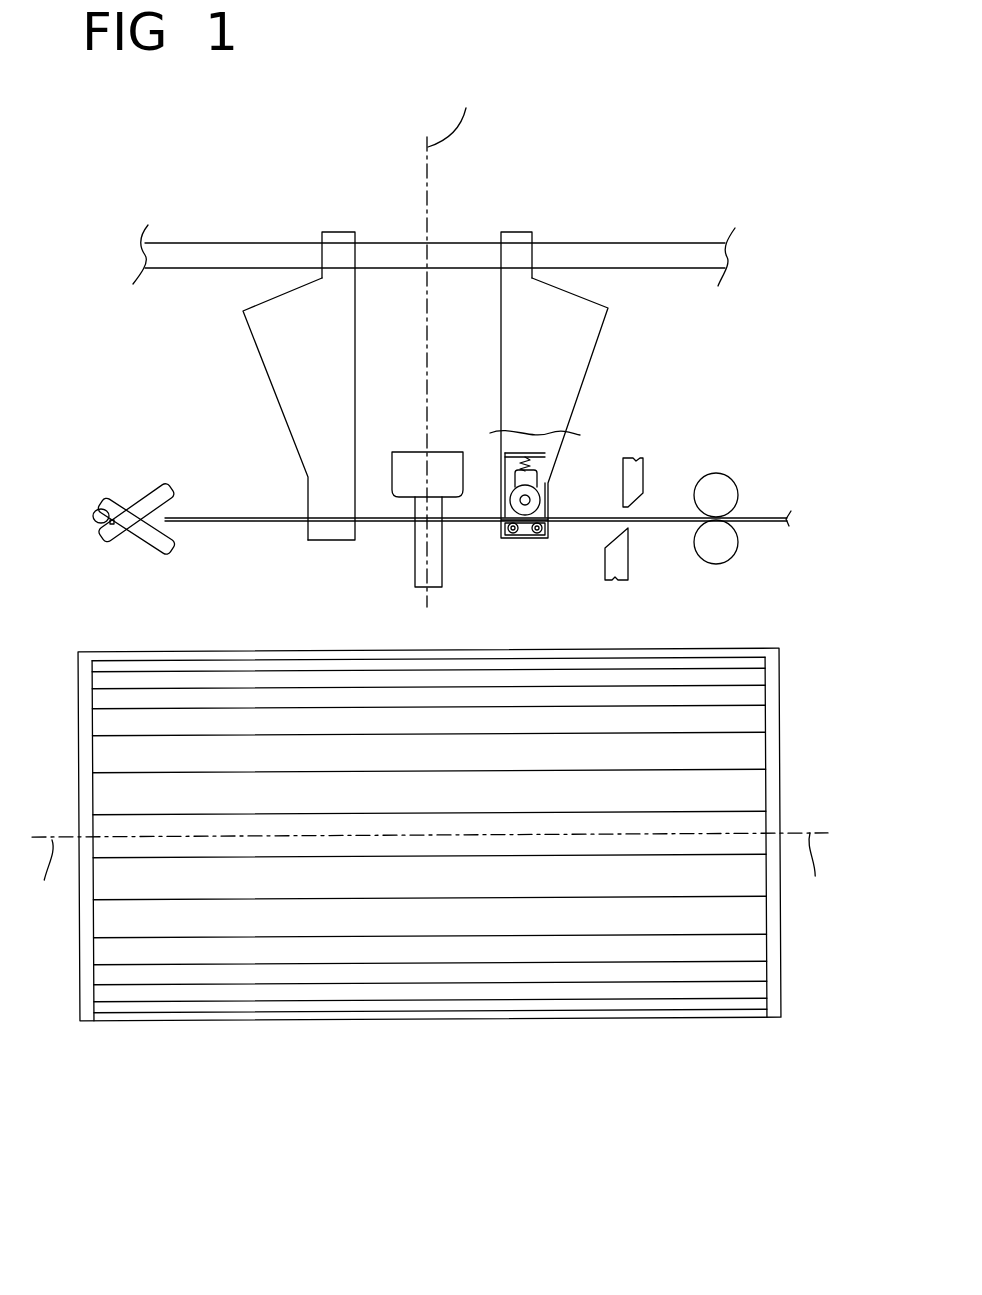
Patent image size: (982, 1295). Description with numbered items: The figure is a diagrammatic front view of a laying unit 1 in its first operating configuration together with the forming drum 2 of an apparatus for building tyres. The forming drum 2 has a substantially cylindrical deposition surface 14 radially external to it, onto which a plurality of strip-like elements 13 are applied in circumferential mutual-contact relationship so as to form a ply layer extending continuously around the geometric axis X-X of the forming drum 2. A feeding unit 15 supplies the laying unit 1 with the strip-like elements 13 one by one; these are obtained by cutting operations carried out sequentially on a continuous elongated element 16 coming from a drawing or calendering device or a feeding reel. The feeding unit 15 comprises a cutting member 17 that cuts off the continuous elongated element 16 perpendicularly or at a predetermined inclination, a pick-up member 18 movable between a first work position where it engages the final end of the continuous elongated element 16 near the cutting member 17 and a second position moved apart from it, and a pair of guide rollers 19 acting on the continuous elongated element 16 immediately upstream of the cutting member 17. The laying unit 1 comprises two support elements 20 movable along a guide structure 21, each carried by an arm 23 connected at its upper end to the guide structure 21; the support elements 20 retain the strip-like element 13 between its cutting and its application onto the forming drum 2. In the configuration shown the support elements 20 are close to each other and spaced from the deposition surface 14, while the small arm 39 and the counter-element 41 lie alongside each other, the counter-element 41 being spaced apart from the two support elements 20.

The laying unit 1 is at (632, 158).
The forming drum 2 is at (454, 1040).
The strip-like elements 13 is at (732, 720).
The deposition surface 14 is at (101, 650).
The feeding unit 15 is at (758, 540).
The continuous elongated element 16 is at (757, 518).
The cutting member 17 is at (657, 452).
The pick-up member 18 is at (116, 476).
The pair of guide rollers 19 is at (716, 490).
The support elements 20 is at (327, 546).
The guide structure 21 is at (220, 258).
The arm 23 is at (291, 337).
The small arm 39 is at (401, 540).
The counter-element 41 is at (408, 466).